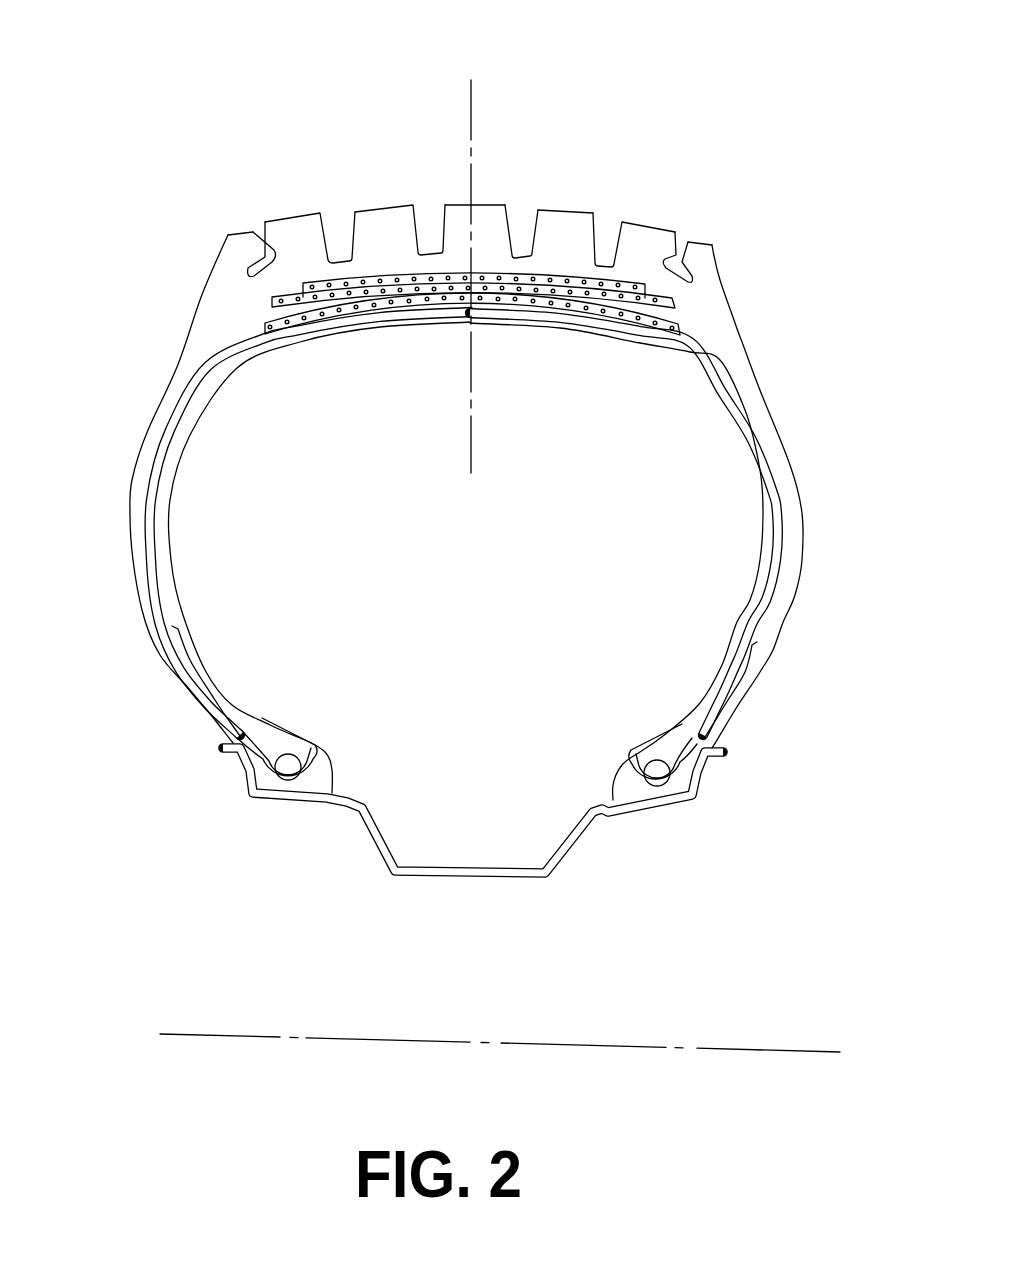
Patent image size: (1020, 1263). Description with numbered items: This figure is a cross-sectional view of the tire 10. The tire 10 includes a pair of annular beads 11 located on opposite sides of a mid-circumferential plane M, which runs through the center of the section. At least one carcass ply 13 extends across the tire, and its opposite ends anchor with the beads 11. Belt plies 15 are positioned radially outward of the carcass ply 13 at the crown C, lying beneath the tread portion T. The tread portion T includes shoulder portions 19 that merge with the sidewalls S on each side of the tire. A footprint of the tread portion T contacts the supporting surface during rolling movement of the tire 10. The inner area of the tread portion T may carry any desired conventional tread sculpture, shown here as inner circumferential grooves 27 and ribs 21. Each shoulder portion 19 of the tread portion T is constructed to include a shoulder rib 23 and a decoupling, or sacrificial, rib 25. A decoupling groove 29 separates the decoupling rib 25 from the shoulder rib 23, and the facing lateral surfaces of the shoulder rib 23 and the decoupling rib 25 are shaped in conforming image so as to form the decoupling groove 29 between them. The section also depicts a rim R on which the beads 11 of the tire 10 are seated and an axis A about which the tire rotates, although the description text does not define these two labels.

The tire 10 is at (633, 138).
The annular beads 11 is at (308, 753).
The carcass ply 13 is at (348, 313).
The belt plies 15 is at (418, 292).
The shoulder portions 19 is at (222, 306).
The ribs 21 is at (385, 222).
The shoulder rib 23 is at (293, 232).
The decoupling rib 25 is at (242, 257).
The inner circumferential grooves 27 is at (432, 210).
The decoupling groove 29 is at (250, 225).
The tread portion T is at (488, 197).
The mid-circumferential plane M is at (470, 453).
The crown C is at (518, 322).
The sidewalls S is at (148, 630).
The rim R is at (365, 847).
The axis of rotation A is at (780, 1048).